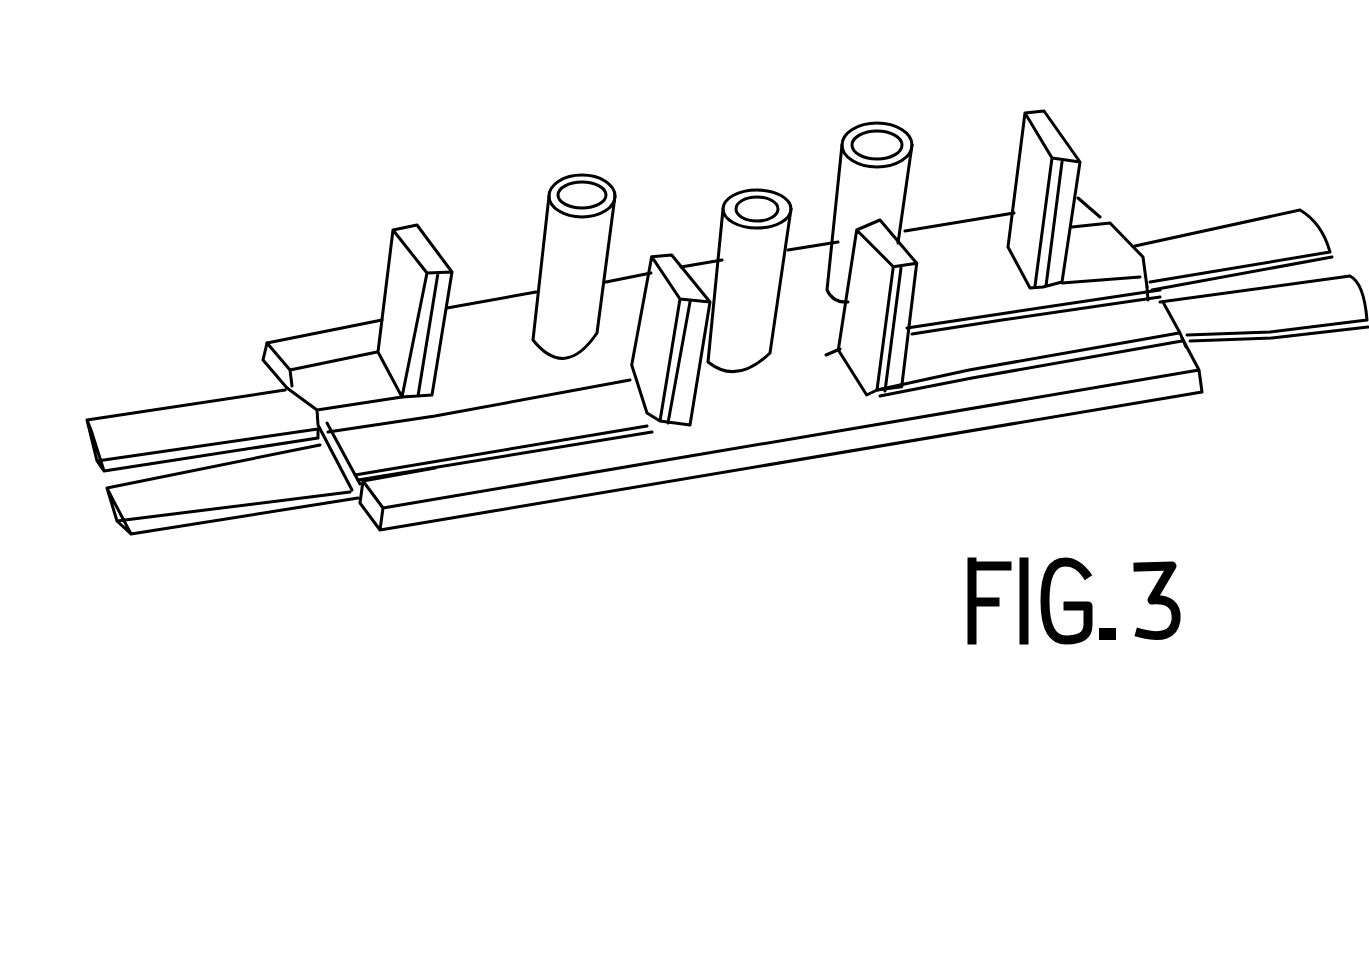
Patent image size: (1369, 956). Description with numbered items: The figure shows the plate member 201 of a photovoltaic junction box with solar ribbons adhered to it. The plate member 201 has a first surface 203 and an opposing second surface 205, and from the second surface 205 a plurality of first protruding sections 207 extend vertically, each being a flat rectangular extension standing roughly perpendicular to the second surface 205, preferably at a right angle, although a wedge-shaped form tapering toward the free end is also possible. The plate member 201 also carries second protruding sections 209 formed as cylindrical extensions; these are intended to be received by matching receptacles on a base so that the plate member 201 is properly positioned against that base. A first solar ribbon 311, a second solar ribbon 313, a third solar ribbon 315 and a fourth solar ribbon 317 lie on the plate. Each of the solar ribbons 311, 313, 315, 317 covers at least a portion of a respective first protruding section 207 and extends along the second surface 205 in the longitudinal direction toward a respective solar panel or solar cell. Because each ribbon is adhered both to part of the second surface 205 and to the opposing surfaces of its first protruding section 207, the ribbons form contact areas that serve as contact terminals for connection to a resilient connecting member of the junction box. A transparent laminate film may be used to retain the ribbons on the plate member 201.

The plate member 201 is at (945, 425).
The first surface 203 is at (653, 508).
The second surface 205 is at (830, 430).
The first protruding section 207 is at (403, 232).
The second protruding section 209 is at (585, 197).
The first solar ribbon 311 is at (1169, 268).
The second solar ribbon 313 is at (1199, 310).
The third solar ribbon 315 is at (238, 510).
The fourth solar ribbon 317 is at (238, 407).